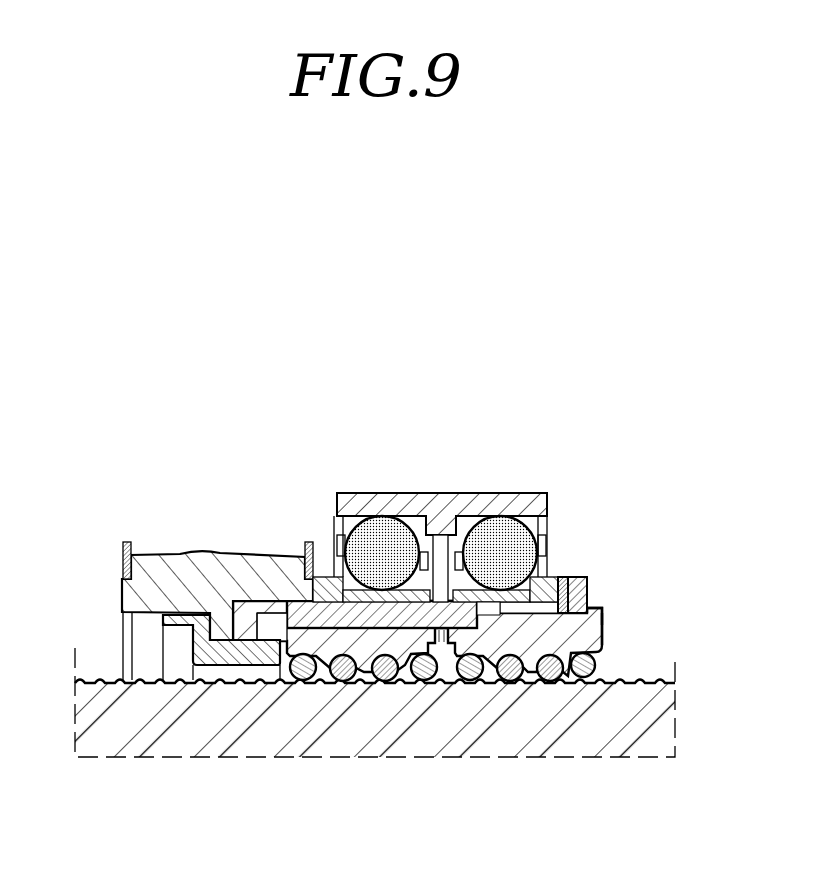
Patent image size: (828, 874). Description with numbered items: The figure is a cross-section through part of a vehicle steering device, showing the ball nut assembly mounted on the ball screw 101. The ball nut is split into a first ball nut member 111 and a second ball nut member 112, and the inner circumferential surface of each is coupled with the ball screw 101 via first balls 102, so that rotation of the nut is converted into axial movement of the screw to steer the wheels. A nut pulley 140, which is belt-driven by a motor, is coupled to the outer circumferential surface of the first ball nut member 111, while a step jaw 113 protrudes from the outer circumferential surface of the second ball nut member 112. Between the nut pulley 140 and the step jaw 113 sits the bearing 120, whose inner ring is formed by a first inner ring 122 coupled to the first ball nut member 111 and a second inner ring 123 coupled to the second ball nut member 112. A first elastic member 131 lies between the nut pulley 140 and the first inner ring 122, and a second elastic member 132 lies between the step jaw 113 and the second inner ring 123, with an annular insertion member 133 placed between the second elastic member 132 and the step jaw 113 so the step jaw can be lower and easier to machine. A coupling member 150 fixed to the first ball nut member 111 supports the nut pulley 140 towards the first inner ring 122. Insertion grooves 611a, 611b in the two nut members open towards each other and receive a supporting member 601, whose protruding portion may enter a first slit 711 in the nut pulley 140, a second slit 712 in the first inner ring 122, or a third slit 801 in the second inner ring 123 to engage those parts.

The ball screw 101 is at (438, 735).
The first balls 102 is at (343, 668).
The first ball nut member 111 is at (323, 653).
The second ball nut member 112 is at (572, 650).
The step jaw 113 is at (602, 606).
The bearing 120 is at (440, 478).
The first inner ring 122 is at (365, 583).
The second inner ring 123 is at (553, 582).
The first elastic member 131 is at (320, 590).
The second elastic member 132 is at (565, 578).
The insertion member 133 is at (583, 593).
The nut pulley 140 is at (125, 598).
The coupling member 150 is at (242, 652).
The supporting member 601 is at (388, 617).
The insertion groove 611a is at (273, 625).
The insertion groove 611b is at (588, 631).
The first slit 711 is at (240, 620).
The second slit 712 is at (333, 578).
The third slit 801 is at (487, 612).